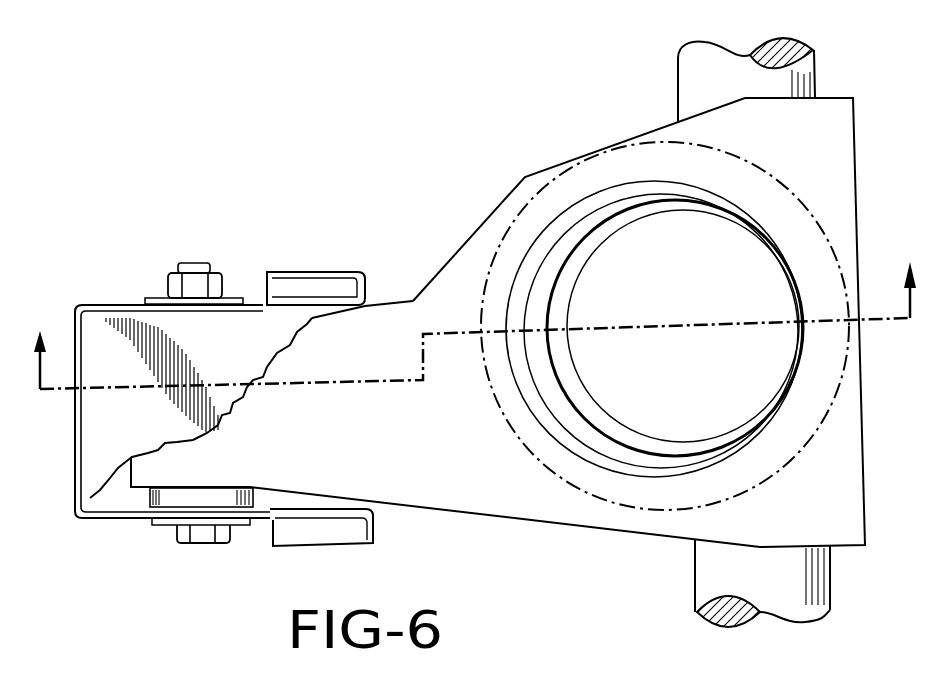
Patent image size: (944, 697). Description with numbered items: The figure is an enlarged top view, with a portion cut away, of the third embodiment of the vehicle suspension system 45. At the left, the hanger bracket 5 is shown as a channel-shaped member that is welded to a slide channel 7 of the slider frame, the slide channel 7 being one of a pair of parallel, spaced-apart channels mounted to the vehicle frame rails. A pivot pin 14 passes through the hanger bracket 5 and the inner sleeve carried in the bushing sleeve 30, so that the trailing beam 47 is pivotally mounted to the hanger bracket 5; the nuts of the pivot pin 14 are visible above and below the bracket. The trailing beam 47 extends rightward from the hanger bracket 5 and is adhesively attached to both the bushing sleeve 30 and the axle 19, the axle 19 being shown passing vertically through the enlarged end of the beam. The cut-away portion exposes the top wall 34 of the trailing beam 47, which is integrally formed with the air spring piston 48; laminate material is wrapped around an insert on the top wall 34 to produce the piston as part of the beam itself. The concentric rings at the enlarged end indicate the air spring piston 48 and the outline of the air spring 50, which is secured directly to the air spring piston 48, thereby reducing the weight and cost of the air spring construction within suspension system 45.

The hanger bracket 5 is at (103, 432).
The slide channel 7 is at (474, 314).
The pivot pin 14 is at (193, 265).
The axle 19 is at (710, 63).
The bushing sleeve 30 is at (180, 500).
The top wall 34 is at (457, 483).
The suspension system 45 is at (585, 335).
The trailing beam 47 is at (463, 255).
The air spring piston 48 is at (612, 446).
The air spring 50 is at (547, 468).